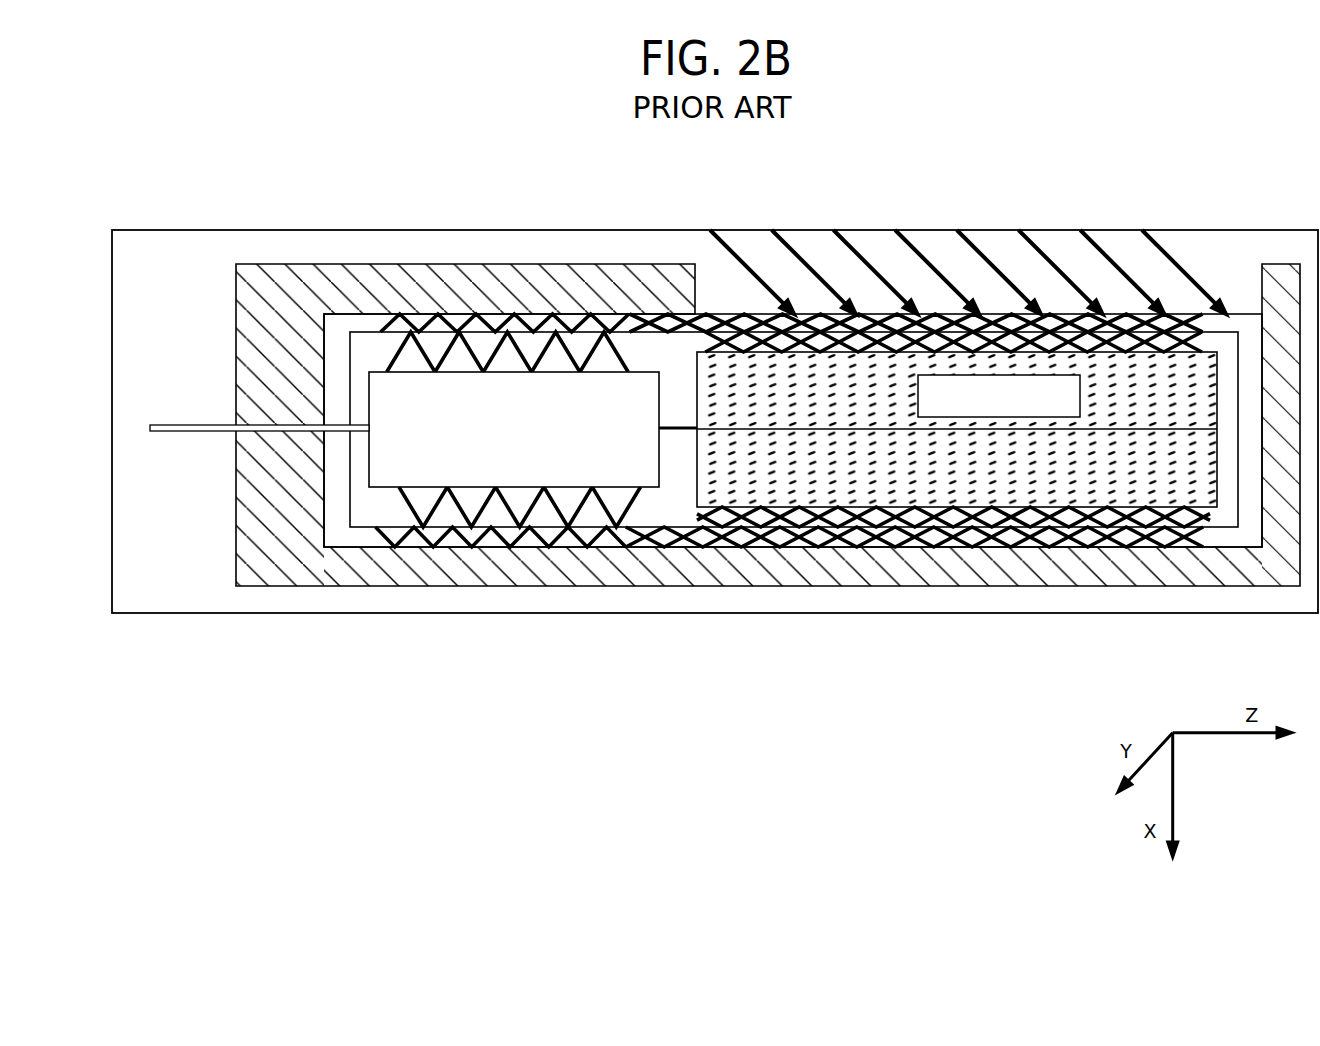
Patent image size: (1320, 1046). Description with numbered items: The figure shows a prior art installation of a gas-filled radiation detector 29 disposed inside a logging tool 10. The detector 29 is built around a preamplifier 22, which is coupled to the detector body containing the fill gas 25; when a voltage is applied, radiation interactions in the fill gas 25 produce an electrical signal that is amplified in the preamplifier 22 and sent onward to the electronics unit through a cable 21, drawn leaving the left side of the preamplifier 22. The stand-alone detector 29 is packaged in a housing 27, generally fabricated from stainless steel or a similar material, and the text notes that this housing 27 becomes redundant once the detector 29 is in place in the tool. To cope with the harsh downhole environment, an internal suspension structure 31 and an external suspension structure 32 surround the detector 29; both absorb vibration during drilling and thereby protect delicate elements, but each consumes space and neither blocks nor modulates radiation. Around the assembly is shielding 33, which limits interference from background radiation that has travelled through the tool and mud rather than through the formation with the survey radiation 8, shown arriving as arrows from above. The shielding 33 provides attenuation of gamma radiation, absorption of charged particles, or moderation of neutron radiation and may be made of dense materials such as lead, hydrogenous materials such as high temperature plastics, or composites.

The survey radiation 8 is at (973, 247).
The logging tool 10 is at (492, 613).
The cable 21 is at (187, 434).
The preamplifier 22 is at (514, 429).
The fill gas 25 is at (957, 429).
The housing 27 is at (660, 528).
The gas-filled detector 29 is at (353, 330).
The internal suspension structure 31 is at (400, 488).
The external suspension structure 32 is at (1138, 548).
The shielding 33 is at (468, 277).